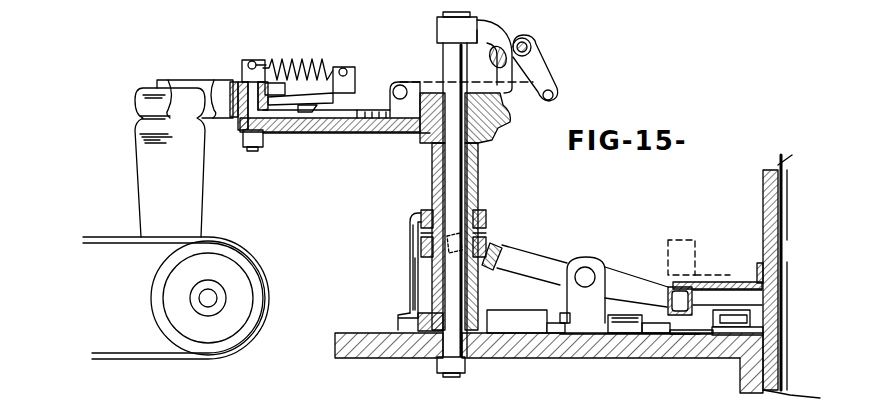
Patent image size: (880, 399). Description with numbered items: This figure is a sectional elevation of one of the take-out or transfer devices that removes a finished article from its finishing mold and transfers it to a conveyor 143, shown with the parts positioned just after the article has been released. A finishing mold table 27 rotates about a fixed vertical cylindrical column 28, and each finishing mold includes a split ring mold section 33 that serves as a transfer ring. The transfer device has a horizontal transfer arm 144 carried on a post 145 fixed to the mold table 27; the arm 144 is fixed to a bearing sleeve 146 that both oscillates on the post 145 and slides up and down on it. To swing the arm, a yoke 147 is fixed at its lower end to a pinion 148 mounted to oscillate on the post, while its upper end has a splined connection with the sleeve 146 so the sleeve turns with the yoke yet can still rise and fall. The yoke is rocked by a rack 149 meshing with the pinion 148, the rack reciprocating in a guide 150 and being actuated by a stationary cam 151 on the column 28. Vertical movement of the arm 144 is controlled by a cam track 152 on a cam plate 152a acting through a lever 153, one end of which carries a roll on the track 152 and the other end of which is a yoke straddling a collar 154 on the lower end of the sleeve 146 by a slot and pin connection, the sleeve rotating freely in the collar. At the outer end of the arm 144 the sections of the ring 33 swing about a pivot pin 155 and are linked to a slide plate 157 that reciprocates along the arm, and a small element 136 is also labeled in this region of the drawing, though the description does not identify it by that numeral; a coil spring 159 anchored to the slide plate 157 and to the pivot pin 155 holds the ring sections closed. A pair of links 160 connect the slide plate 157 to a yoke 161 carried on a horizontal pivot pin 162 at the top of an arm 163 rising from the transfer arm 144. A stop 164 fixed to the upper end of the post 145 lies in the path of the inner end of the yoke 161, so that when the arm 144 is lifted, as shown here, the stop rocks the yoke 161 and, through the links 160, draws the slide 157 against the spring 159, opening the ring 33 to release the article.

The finishing mold table 27 is at (585, 355).
The vertical cylindrical column 28 is at (765, 208).
The split ring mold section 33 is at (188, 90).
The cam lever stem 136 is at (290, 107).
The conveyor 143 is at (110, 237).
The transfer arm 144 is at (362, 133).
The post 145 is at (470, 190).
The bearing sleeve 146 is at (432, 185).
The yoke 147 is at (410, 269).
The pinion 148 is at (398, 319).
The rack 149 is at (493, 312).
The guide 150 is at (522, 340).
The stationary cam 151 is at (745, 312).
The cam track 152 is at (666, 282).
The cam plate 152a is at (752, 265).
The lever 153 is at (553, 236).
The collar 154 is at (423, 243).
The pivot pin 155 is at (270, 50).
The slide plate 157 is at (386, 115).
The coil spring 159 is at (308, 62).
The links 160 is at (503, 88).
The yoke 161 is at (548, 76).
The horizontal pivot pin 162 is at (531, 46).
The arm 163 is at (505, 120).
The stop 164 is at (482, 25).